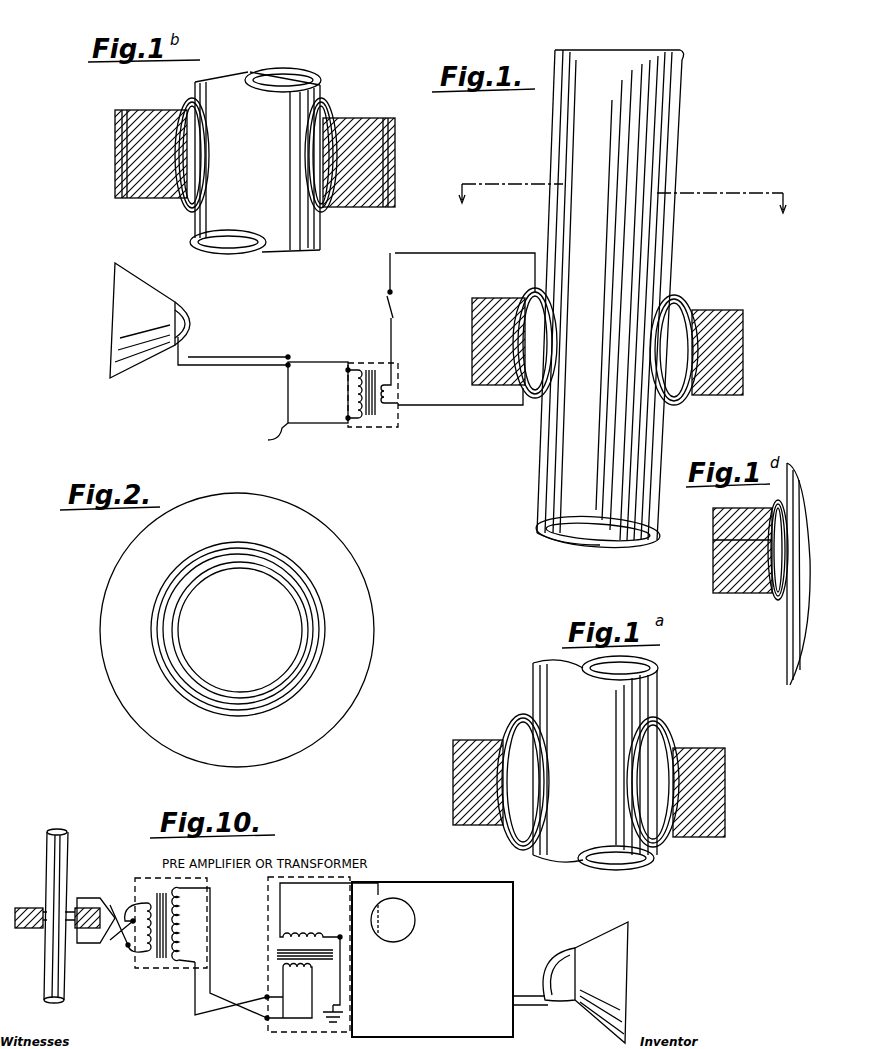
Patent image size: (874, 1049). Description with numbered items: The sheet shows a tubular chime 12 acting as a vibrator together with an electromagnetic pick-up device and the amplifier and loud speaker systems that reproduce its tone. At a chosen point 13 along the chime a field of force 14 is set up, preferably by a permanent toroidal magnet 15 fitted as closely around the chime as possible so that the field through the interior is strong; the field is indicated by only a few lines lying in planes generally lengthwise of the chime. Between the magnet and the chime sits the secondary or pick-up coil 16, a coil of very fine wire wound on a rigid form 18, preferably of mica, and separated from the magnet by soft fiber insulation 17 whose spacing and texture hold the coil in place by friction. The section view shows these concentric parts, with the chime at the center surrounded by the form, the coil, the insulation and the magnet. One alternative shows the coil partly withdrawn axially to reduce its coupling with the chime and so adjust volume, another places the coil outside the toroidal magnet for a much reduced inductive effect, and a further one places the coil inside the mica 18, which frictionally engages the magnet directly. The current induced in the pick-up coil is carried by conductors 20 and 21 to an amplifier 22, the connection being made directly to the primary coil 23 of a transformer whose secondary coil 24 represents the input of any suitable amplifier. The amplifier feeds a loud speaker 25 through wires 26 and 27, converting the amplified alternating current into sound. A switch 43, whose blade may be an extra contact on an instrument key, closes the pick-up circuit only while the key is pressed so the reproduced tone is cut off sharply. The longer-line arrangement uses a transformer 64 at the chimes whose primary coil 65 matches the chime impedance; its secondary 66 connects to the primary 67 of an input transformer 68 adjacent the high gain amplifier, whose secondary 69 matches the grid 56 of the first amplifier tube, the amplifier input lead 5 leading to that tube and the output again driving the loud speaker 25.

In FIG. 10, the amplifier input lead 5 is at (426, 952).
In FIG. 1B, the chime 12 is at (305, 108).
In FIG. 1, the chime 12 is at (660, 135).
In FIG. 2, the chime 12 is at (300, 695).
In FIG. 1D, the chime 12 is at (788, 630).
In FIG. 1A, the chime 12 is at (650, 700).
In FIG. 10, the chime 12 is at (62, 862).
In FIG. 1B, the point 13 is at (246, 168).
In FIG. 1, the point 13 is at (603, 347).
In FIG. 1A, the point 13 is at (585, 750).
In FIG. 1B, the field of force 14 is at (180, 205).
In FIG. 1, the field of force 14 is at (552, 360).
In FIG. 1D, the field of force 14 is at (772, 505).
In FIG. 1A, the field of force 14 is at (540, 775).
In FIG. 1B, the toroidal magnet 15 is at (346, 205).
In FIG. 1, the toroidal magnet 15 is at (730, 364).
In FIG. 2, the toroidal magnet 15 is at (360, 655).
In FIG. 1D, the toroidal magnet 15 is at (742, 550).
In FIG. 1A, the toroidal magnet 15 is at (718, 795).
In FIG. 10, the toroidal magnet 15 is at (24, 908).
In FIG. 1B, the secondary coil 16 is at (408, 183).
In FIG. 1, the secondary coil 16 is at (704, 305).
In FIG. 2, the secondary coil 16 is at (322, 627).
In FIG. 1D, the secondary coil 16 is at (715, 572).
In FIG. 1A, the secondary coil 16 is at (508, 725).
In FIG. 10, the secondary coil 16 is at (36, 928).
In FIG. 1B, the insulation 17 is at (380, 205).
In FIG. 1, the insulation 17 is at (720, 380).
In FIG. 2, the insulation 17 is at (310, 668).
In FIG. 1A, the insulation 17 is at (676, 725).
In FIG. 1B, the rigid form 18 is at (125, 198).
In FIG. 1, the rigid form 18 is at (530, 410).
In FIG. 2, the rigid form 18 is at (265, 710).
In FIG. 1D, the rigid form 18 is at (713, 535).
In FIG. 1A, the rigid form 18 is at (660, 845).
In FIG. 1, the conductor 20 is at (450, 253).
In FIG. 10, the conductor 20 is at (100, 898).
In FIG. 1, the conductor 21 is at (455, 405).
In FIG. 10, the conductor 21 is at (88, 943).
In FIG. 1, the amplifier 22 is at (318, 372).
In FIG. 1, the primary coil 23 is at (395, 390).
In FIG. 1, the secondary coil 24 is at (360, 418).
In FIG. 1, the loud speaker 25 is at (118, 335).
In FIG. 10, the loud speaker 25 is at (612, 958).
In FIG. 1, the wire 26 is at (242, 356).
In FIG. 1, the wire 27 is at (241, 366).
In FIG. 1, the switch 43 is at (384, 306).
In FIG. 10, the switch 43 is at (118, 935).
In FIG. 10, the grid 56 is at (390, 930).
In FIG. 10, the transformer 64 is at (172, 965).
In FIG. 10, the primary coil 65 is at (145, 952).
In FIG. 10, the secondary 66 is at (190, 975).
In FIG. 10, the primary 67 is at (283, 968).
In FIG. 10, the input transformer 68 is at (277, 953).
In FIG. 10, the secondary 69 is at (283, 935).